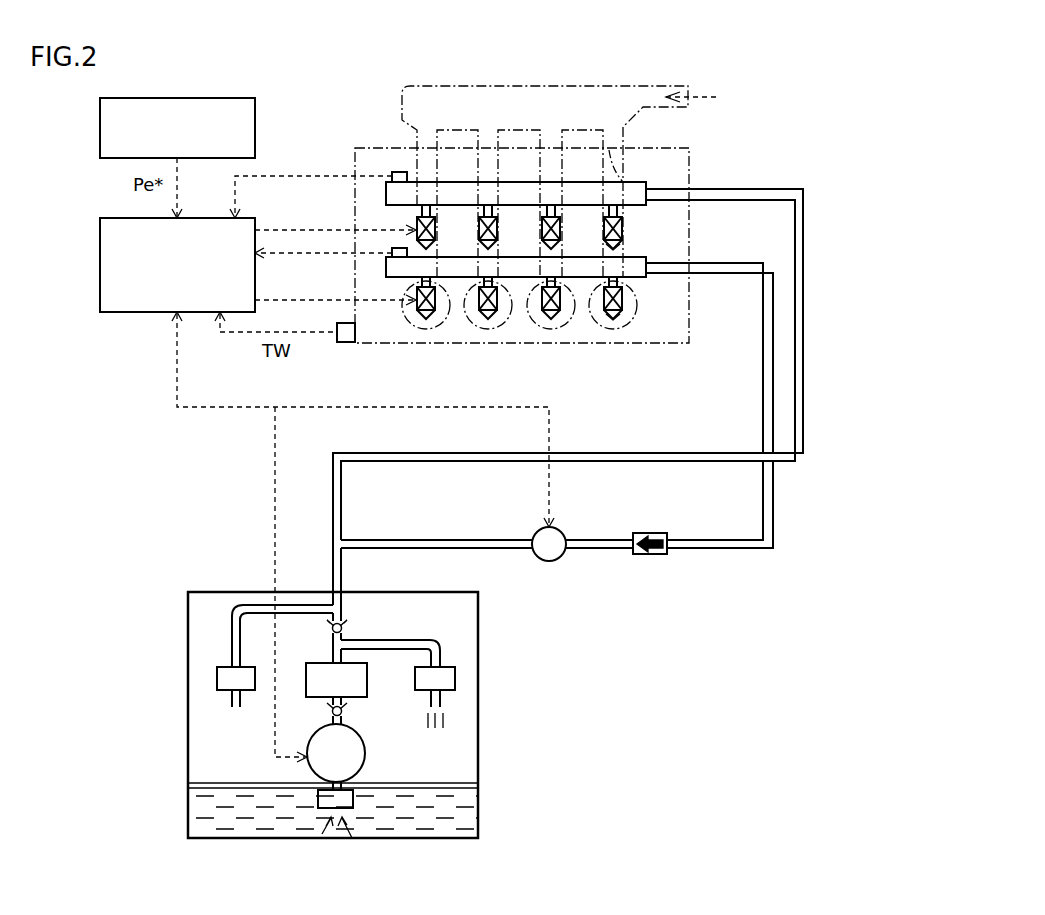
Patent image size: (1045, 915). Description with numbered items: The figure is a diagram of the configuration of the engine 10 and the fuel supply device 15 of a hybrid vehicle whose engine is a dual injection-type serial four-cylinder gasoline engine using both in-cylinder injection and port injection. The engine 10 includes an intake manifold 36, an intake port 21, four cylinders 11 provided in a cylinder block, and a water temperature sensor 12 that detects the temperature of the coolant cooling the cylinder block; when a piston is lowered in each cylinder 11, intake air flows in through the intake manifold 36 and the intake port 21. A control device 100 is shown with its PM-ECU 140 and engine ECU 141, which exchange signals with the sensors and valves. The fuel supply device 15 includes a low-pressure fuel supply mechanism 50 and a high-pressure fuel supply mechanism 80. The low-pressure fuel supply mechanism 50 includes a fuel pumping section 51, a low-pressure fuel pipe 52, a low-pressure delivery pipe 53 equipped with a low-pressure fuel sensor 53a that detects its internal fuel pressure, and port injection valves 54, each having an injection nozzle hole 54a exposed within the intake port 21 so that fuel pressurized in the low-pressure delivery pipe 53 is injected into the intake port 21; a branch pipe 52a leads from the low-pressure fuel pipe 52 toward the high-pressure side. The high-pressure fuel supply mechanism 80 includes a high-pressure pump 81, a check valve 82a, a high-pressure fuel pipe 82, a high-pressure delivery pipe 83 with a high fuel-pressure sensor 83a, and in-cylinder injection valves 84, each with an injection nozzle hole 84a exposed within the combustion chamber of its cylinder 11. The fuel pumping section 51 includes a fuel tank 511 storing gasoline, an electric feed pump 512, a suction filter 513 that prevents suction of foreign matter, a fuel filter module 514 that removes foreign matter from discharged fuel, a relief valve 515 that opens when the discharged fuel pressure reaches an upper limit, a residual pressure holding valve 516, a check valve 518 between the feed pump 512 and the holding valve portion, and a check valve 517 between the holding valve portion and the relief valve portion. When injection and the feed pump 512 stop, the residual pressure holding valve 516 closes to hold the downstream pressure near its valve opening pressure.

The control device 100 is at (83, 85).
The PM-ECU 140 is at (200, 98).
The engine ECU 141 is at (122, 312).
The water temperature sensor 12 is at (344, 343).
The engine 10 is at (692, 160).
The intake manifold 36 is at (524, 86).
The intake port 21 is at (612, 160).
The low-pressure delivery pipe 53 is at (640, 182).
The low-pressure fuel sensor 53a is at (397, 172).
The port injection valve 54 is at (623, 232).
The injection nozzle hole 54a is at (607, 251).
The high-pressure delivery pipe 83 is at (640, 258).
The high fuel-pressure sensor 83a is at (397, 247).
The in-cylinder injection valve 84 is at (624, 302).
The injection nozzle hole 84a is at (614, 321).
The cylinder 11 is at (598, 335).
The low-pressure fuel pipe 52 is at (630, 453).
The branch pipe 52a is at (420, 540).
The high-pressure pump 81 is at (563, 531).
The high-pressure fuel pipe 82 is at (723, 540).
The check valve 82a is at (647, 533).
The fuel pumping section 51 is at (549, 585).
The fuel tank 511 is at (207, 590).
The check valve 517 is at (348, 628).
The relief valve 515 is at (217, 677).
The fuel filter module 514 is at (367, 668).
The residual pressure holding valve 516 is at (455, 678).
The check valve 518 is at (347, 712).
The electric feed pump 512 is at (362, 768).
The suction filter 513 is at (353, 801).
The fuel supply device 15 is at (639, 613).
The high-pressure fuel supply mechanism 80 is at (600, 585).
The low-pressure fuel supply mechanism 50 is at (578, 630).